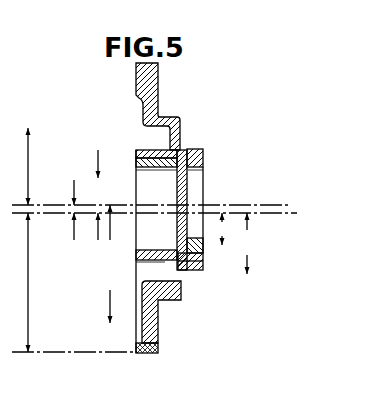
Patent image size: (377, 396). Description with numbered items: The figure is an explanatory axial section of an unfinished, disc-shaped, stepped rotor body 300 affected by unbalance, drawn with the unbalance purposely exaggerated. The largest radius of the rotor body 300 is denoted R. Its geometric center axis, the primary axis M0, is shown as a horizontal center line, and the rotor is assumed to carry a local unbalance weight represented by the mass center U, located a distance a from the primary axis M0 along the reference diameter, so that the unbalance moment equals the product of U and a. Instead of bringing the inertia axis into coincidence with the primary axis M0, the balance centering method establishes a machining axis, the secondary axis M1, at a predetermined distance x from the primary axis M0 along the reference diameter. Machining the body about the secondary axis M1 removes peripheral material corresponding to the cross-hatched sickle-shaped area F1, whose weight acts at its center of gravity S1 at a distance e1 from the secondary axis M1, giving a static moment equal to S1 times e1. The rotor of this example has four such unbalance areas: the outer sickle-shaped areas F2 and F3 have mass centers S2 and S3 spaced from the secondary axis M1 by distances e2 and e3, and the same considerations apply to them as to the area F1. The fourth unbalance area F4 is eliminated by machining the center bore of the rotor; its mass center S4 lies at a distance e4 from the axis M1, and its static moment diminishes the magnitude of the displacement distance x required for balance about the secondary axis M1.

The rotor body 300 is at (160, 82).
The mass center of local unbalance weight U is at (22, 128).
The sickle-shaped area F1 is at (159, 351).
The outer sickle-shaped area F2 is at (183, 300).
The outer sickle-shaped area F3 is at (204, 258).
The fourth unbalance area F4 is at (138, 162).
The center of gravity of area F1 S1 is at (98, 323).
The mass center of area F2 S2 is at (256, 275).
The mass center of area F3 S3 is at (230, 245).
The mass center of area F4 S4 is at (92, 178).
The secondary axis M1 is at (153, 199).
The primary axis M0 is at (154, 223).
The distance of unbalance mass center from primary axis a is at (29, 166).
The largest radius of rotor body R is at (25, 282).
The displacement distance x is at (76, 206).
The distance of gravity center S1 from secondary axis e1 is at (110, 264).
The distance of mass center S2 from secondary axis e2 is at (245, 243).
The distance of mass center S3 from secondary axis e3 is at (224, 229).
The distance of mass center S4 from secondary axis e4 is at (104, 195).